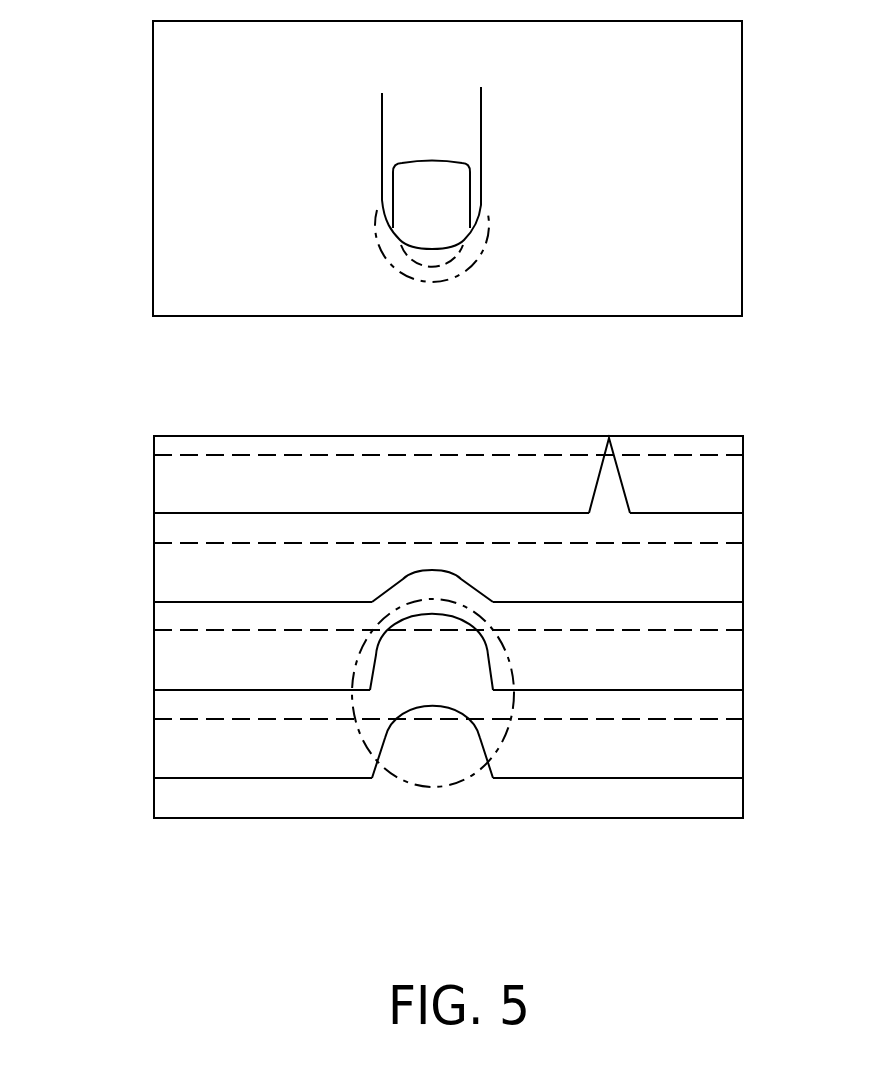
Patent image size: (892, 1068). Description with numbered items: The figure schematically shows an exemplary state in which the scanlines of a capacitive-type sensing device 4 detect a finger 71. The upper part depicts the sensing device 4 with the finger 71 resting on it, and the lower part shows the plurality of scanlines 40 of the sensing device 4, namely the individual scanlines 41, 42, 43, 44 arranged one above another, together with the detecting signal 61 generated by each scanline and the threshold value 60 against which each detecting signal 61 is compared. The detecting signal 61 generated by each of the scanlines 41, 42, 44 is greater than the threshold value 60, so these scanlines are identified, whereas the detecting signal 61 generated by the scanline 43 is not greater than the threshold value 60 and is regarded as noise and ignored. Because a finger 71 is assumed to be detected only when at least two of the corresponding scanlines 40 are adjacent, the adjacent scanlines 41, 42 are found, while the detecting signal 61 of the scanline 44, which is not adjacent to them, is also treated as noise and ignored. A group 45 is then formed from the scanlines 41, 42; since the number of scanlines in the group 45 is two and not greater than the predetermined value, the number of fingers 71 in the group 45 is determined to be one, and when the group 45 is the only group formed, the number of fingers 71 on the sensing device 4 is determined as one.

The sensing device 4 is at (742, 97).
The finger 71 is at (481, 172).
The group 45 is at (478, 258).
The scanlines 40 is at (137, 560).
The scanline 41 is at (172, 778).
The scanline 42 is at (172, 690).
The scanline 43 is at (172, 602).
The scanline 44 is at (172, 513).
The threshold value 60 is at (707, 455).
The detecting signal 61 is at (622, 480).